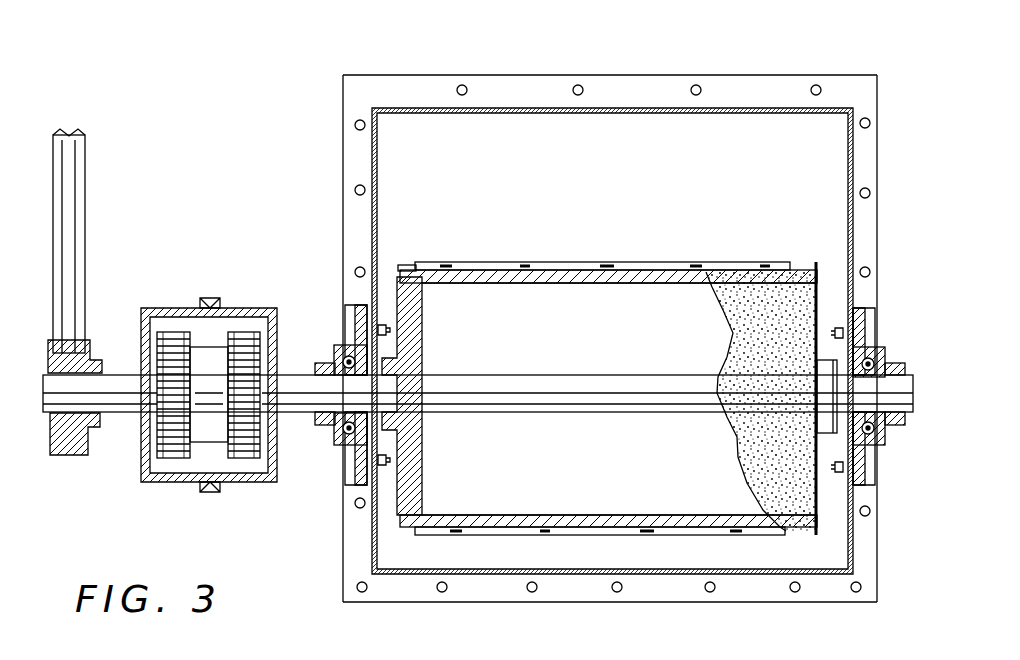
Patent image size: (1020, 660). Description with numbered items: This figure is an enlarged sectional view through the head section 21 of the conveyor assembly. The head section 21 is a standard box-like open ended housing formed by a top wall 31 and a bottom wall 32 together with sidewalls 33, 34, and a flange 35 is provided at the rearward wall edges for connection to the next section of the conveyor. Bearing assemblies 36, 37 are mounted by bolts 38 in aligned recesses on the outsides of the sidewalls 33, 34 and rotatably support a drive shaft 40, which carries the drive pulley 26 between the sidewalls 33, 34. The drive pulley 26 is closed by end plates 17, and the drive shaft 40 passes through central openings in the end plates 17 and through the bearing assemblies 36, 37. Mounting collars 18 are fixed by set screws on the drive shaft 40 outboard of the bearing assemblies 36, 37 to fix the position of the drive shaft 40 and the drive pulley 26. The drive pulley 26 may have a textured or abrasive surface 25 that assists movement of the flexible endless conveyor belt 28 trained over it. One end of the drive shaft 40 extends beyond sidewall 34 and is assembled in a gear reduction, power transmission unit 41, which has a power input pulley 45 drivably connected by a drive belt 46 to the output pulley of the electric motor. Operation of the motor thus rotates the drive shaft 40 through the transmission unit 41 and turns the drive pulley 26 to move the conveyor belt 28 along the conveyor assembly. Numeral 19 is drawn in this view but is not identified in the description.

The end plates 17 is at (425, 335).
The mounting collars 18 is at (332, 440).
The bearing 19 is at (333, 365).
The head section 21 is at (610, 336).
The textured or abrasive surface 25 is at (800, 264).
The drive pulley 26 is at (400, 270).
The conveyor belt 28 is at (605, 264).
The top wall 31 is at (756, 116).
The bottom wall 32 is at (515, 572).
The sidewall 33 is at (852, 178).
The sidewall 34 is at (377, 178).
The flange 35 is at (448, 88).
The bearing assembly 36 is at (878, 335).
The bearing assembly 37 is at (350, 340).
The bolts 38 is at (360, 470).
The drive shaft 40 is at (123, 416).
The gear reduction, power transmission unit 41 is at (236, 483).
The power input pulley 45 is at (58, 440).
The drive belt 46 is at (88, 198).